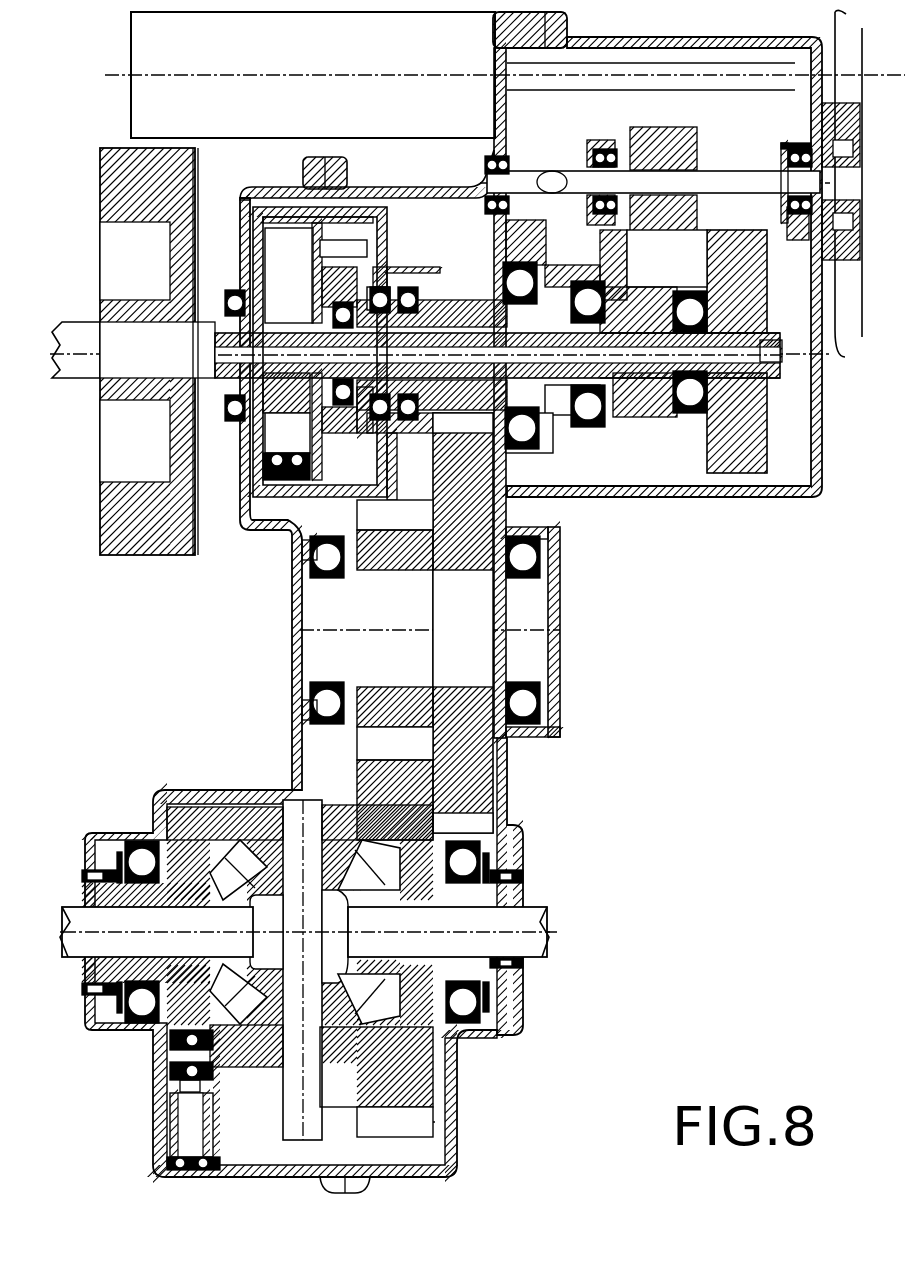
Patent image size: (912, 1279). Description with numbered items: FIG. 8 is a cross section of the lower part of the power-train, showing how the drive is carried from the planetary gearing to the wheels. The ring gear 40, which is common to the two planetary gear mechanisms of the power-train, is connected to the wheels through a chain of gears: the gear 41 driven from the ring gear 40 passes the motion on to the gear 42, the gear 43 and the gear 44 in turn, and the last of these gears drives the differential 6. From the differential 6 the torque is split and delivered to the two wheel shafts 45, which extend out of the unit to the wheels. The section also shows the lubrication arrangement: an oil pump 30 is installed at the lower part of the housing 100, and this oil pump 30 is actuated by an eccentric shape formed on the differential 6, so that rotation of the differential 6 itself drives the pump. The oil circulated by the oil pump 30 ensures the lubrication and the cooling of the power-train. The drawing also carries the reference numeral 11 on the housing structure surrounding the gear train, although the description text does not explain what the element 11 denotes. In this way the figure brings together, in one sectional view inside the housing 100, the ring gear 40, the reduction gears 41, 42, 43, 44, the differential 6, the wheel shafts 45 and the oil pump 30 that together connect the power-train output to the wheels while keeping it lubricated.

The differential 6 is at (237, 800).
The case 11 is at (553, 597).
The oil pump 30 is at (163, 1080).
The ring gear 40 is at (293, 500).
The gear 41 is at (480, 423).
The gear 42 is at (463, 572).
The gear 43 is at (400, 572).
The gear 44 is at (437, 1093).
The wheel shafts 45 is at (547, 905).
The housing 100 is at (163, 1127).